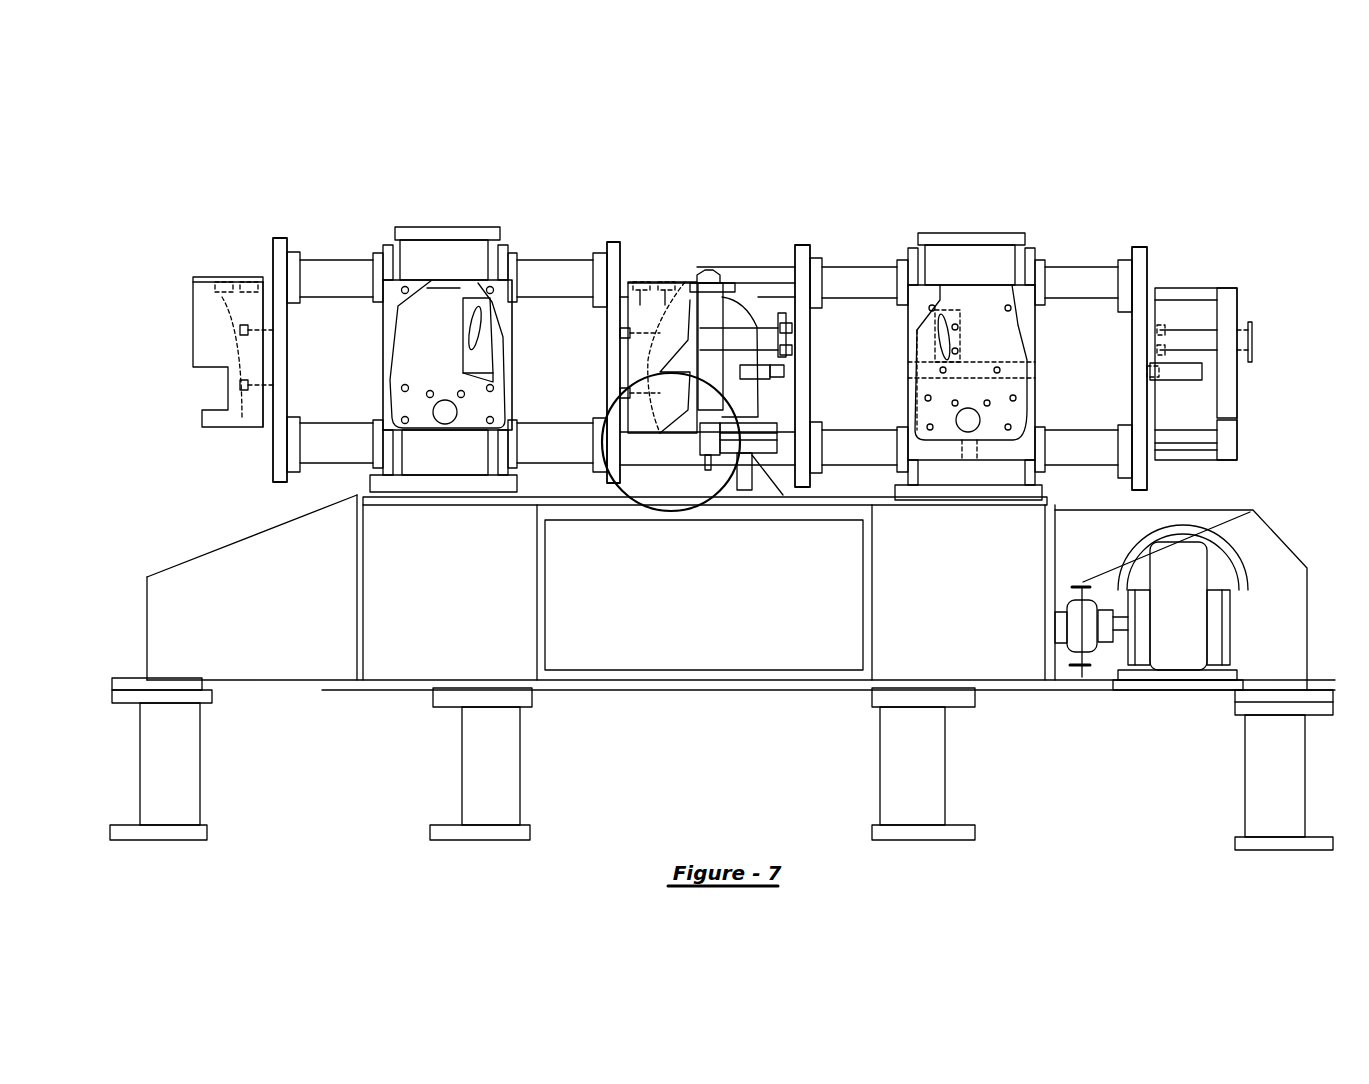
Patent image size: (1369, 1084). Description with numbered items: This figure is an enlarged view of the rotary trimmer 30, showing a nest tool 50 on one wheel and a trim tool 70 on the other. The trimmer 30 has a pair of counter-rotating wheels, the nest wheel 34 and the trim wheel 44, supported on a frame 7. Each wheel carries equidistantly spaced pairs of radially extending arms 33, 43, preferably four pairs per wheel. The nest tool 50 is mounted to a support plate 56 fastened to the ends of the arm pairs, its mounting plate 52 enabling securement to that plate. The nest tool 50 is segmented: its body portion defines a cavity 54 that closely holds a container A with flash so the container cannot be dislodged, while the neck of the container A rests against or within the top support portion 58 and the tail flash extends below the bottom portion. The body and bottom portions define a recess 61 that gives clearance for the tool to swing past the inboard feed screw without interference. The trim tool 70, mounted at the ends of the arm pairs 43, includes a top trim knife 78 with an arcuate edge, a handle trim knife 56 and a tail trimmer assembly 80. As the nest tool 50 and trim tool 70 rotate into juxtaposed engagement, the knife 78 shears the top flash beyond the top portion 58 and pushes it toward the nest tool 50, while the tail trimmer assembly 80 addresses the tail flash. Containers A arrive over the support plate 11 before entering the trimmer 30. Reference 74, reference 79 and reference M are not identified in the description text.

The frame 7 is at (545, 595).
The support plate 11 is at (705, 500).
The rotary trimmer 30 is at (627, 240).
The arms 33 is at (343, 275).
The nest wheel 34 is at (463, 232).
The arms 43 is at (852, 287).
The trim wheel 44 is at (980, 242).
The nest tool 50 is at (500, 362).
The mounting plate 52 is at (505, 285).
The cavity 54 is at (490, 368).
The support plate 56 is at (938, 332).
The top support portion 58 is at (443, 285).
The recess 61 is at (233, 377).
The trim tool 70 is at (760, 282).
The slot 74 is at (1008, 333).
The top trim knife 78 is at (1020, 338).
The support block 79 is at (1010, 448).
The tail trimmer assembly 80 is at (748, 450).
The container A is at (733, 303).
The motor M is at (1227, 568).